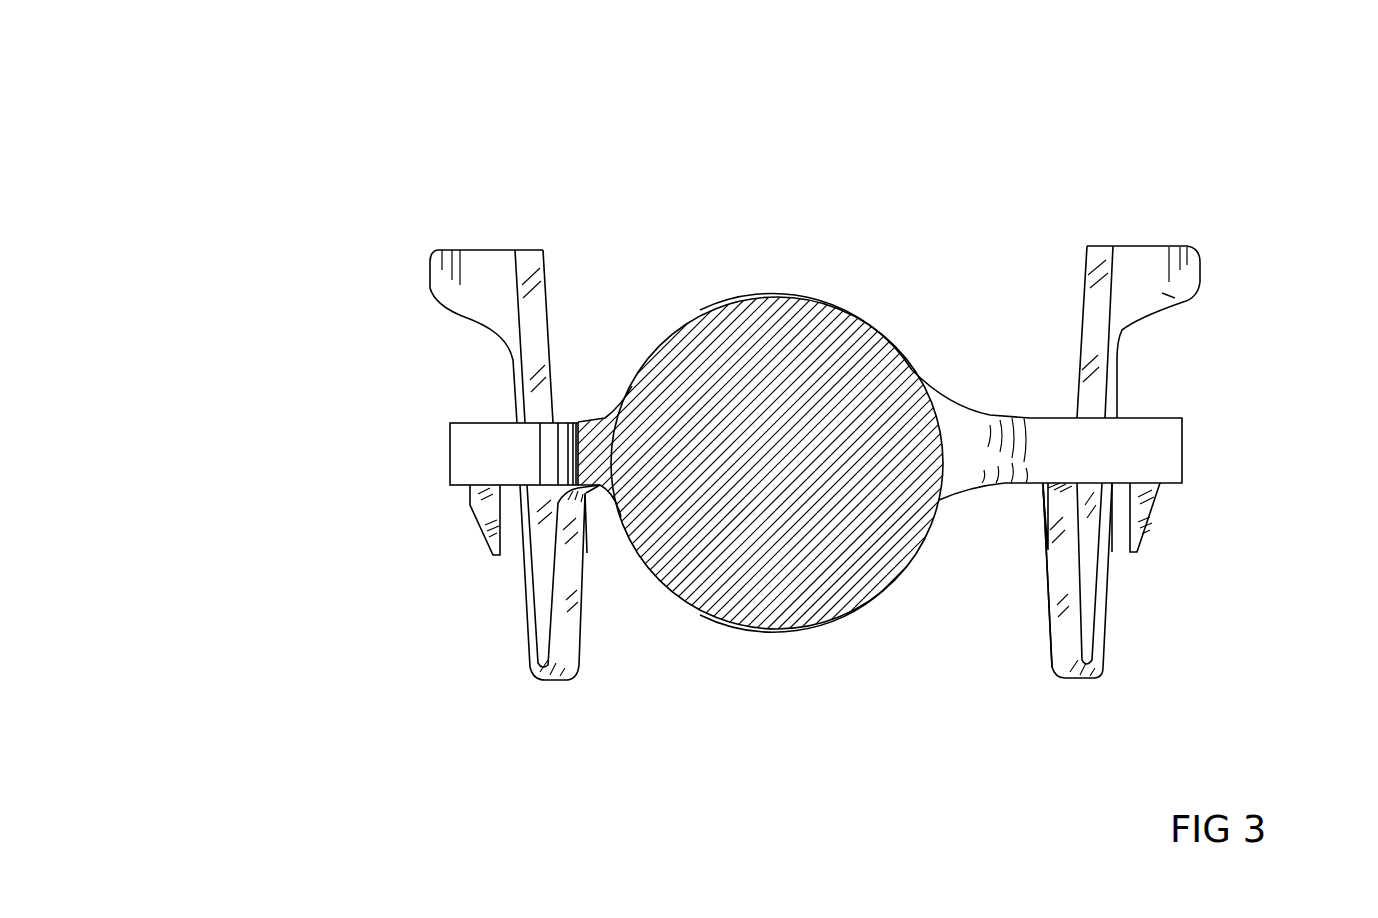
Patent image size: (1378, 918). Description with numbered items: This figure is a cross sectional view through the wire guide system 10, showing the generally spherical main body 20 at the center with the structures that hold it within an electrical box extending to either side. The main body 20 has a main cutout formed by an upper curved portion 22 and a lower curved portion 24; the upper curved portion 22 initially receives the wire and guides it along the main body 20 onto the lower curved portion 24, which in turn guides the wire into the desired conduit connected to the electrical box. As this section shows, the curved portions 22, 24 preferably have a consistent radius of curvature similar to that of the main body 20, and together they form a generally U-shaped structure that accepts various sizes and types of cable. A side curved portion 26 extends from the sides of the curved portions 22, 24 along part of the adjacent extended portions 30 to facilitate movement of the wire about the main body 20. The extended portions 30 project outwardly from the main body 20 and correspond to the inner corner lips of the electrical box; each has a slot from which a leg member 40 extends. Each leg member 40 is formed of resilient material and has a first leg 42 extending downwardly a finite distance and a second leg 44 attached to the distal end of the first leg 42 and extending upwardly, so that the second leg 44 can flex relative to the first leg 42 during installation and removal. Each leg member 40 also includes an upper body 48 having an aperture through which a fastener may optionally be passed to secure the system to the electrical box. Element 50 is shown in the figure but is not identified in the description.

The wire guide system 10 is at (405, 223).
The main body 20 is at (729, 302).
The upper curved portion 22 is at (888, 346).
The lower curved portion 24 is at (885, 590).
The side curved portion 26 is at (994, 446).
The extended portions 30 is at (475, 442).
The leg members 40 is at (1128, 247).
The first leg 42 is at (1058, 560).
The second leg 44 is at (1092, 548).
The upper body 48 is at (1178, 305).
The retention tab 50 is at (1155, 500).